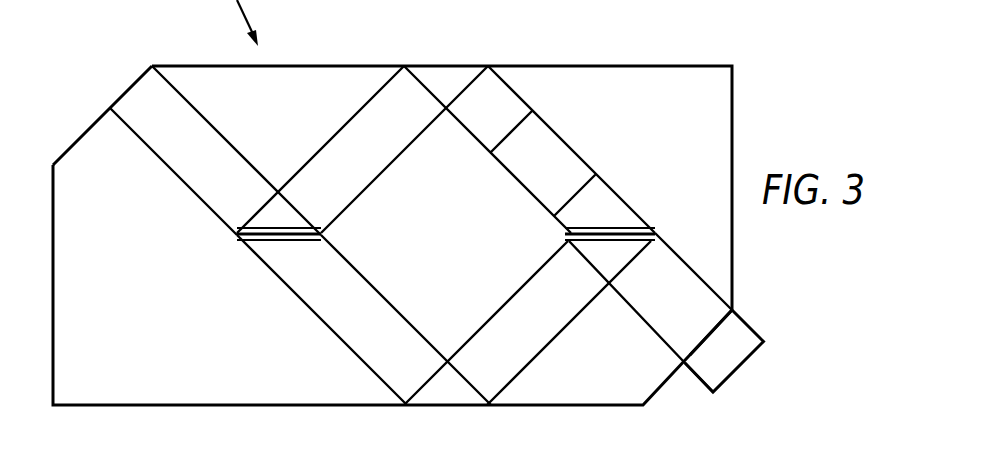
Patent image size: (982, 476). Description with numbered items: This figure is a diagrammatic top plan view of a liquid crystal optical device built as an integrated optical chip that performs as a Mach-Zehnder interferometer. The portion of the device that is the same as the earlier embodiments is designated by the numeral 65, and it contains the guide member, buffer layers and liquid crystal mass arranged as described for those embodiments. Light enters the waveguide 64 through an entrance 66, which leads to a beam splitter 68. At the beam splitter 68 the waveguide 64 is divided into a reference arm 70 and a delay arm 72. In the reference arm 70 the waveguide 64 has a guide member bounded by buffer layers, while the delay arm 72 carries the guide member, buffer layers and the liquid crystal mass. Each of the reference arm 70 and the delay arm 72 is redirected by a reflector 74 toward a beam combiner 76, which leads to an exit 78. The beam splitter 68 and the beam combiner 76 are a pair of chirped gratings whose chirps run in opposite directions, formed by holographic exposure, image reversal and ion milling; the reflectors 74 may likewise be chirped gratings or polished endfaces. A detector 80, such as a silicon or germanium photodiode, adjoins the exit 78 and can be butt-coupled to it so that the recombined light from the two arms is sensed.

The waveguide 64 is at (182, 96).
The portion of LC optical device same as FIG. 1 or 2 65 is at (593, 152).
The entrance 66 is at (127, 89).
The beam splitter 68 is at (261, 242).
The reference arm 70 is at (326, 328).
The delay arm 72 is at (353, 117).
The reflector 74 is at (447, 78).
The beam combiner 76 is at (633, 226).
The exit 78 is at (720, 331).
The detector 80 is at (730, 382).